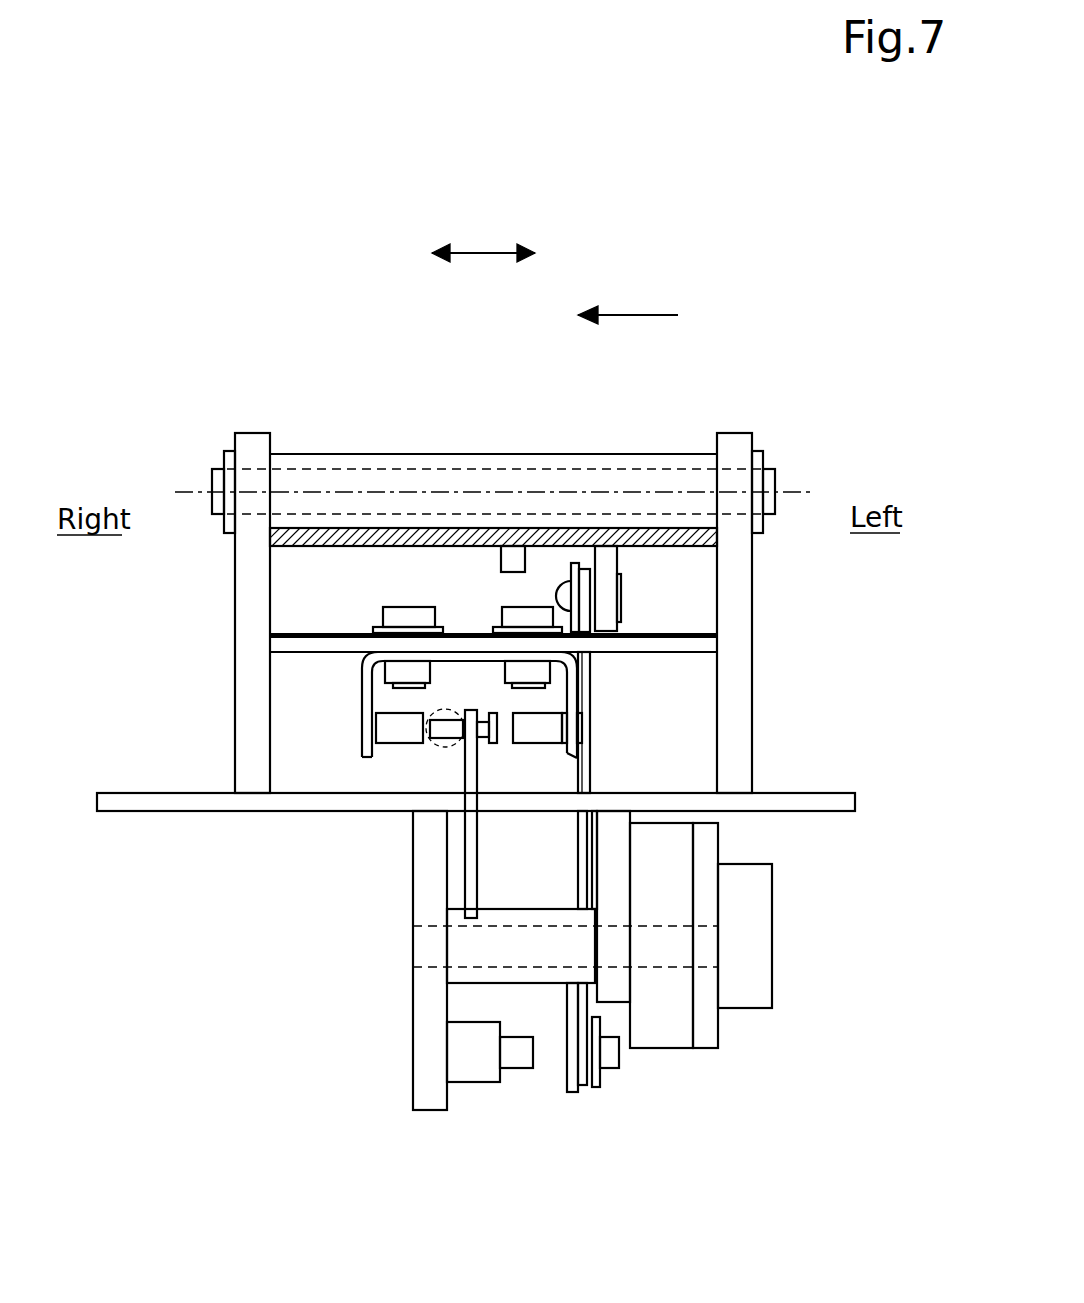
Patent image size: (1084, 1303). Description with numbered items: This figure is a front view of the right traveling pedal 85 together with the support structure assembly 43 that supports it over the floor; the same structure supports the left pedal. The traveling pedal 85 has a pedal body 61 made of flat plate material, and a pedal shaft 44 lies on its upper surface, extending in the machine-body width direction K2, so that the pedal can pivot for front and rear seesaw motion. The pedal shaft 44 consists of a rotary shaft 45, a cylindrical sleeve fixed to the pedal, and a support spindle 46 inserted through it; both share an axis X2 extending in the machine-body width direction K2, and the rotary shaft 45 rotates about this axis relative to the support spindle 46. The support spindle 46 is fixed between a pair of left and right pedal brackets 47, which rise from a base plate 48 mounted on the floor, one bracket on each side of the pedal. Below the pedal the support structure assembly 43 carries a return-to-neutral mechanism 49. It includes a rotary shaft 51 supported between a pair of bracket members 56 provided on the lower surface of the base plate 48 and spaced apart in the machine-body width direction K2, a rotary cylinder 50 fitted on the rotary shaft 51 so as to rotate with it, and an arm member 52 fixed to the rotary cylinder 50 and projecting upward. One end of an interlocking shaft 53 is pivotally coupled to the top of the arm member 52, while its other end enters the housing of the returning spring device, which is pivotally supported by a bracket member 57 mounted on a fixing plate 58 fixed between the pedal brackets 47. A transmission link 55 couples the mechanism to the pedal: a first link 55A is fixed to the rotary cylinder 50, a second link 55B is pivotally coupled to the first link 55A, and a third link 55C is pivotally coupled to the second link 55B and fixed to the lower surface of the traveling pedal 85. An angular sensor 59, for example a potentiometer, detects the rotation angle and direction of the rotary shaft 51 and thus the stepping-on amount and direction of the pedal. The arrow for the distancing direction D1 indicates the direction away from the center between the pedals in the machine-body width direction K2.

The support structure assembly 43 is at (693, 740).
The pedal shaft 44 is at (607, 446).
The rotary shaft 45 is at (483, 452).
The support spindle 46 is at (690, 454).
The pedal bracket 47 is at (235, 578).
The base plate 48 is at (147, 793).
The return-to-neutral mechanism 49 is at (604, 721).
The rotary cylinder 50 is at (542, 985).
The rotary shaft 51 is at (530, 925).
The arm member 52 is at (465, 850).
The interlocking shaft 53 is at (462, 710).
The transmission link 55 is at (620, 1076).
The first link 55A is at (575, 1092).
The second link 55B is at (592, 770).
The third link 55C is at (618, 558).
The bracket member 56 is at (413, 1037).
The bracket member 57 is at (356, 706).
The fixing plate 58 is at (303, 634).
The angular sensor 59 is at (720, 1030).
The pedal body 61 is at (370, 528).
The traveling pedal 85 is at (694, 553).
The axis X2 is at (325, 490).
The machine-body width direction K2 is at (480, 253).
The distancing direction D1 is at (633, 315).